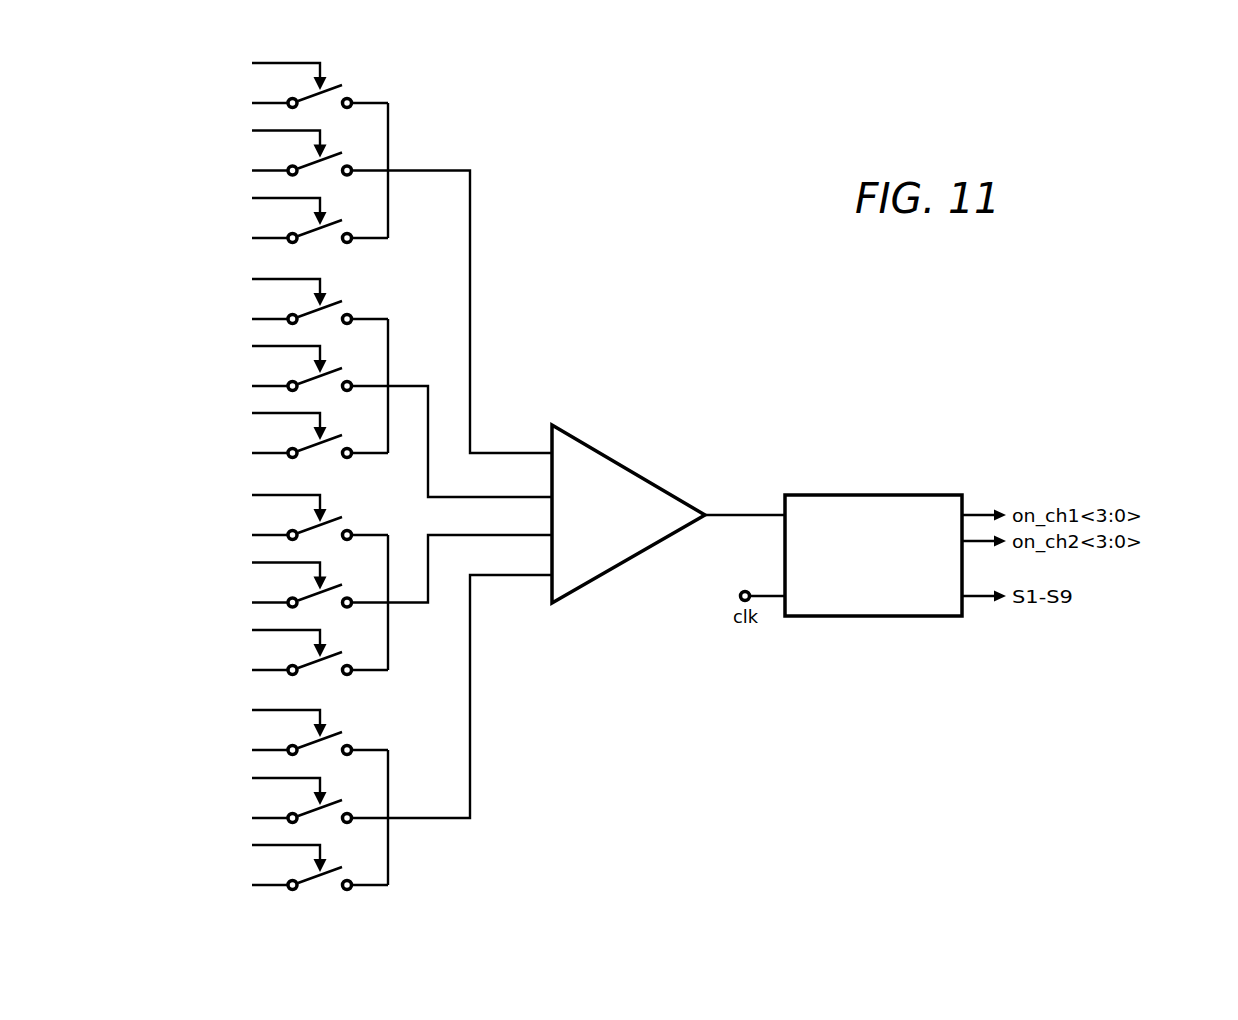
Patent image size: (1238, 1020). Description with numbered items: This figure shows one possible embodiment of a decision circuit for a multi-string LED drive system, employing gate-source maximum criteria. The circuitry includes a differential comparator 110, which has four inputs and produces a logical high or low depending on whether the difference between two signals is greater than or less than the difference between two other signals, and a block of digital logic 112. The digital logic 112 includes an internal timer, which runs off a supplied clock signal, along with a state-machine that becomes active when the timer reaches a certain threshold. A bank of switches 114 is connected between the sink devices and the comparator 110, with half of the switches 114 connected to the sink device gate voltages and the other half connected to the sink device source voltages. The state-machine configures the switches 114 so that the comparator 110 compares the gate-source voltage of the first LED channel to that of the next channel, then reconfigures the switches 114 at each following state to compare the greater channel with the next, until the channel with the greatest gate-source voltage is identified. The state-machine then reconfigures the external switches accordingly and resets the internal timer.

The differential comparator 110 is at (621, 465).
The block of digital logic 112 is at (883, 495).
The bank of switches 114 is at (362, 68).